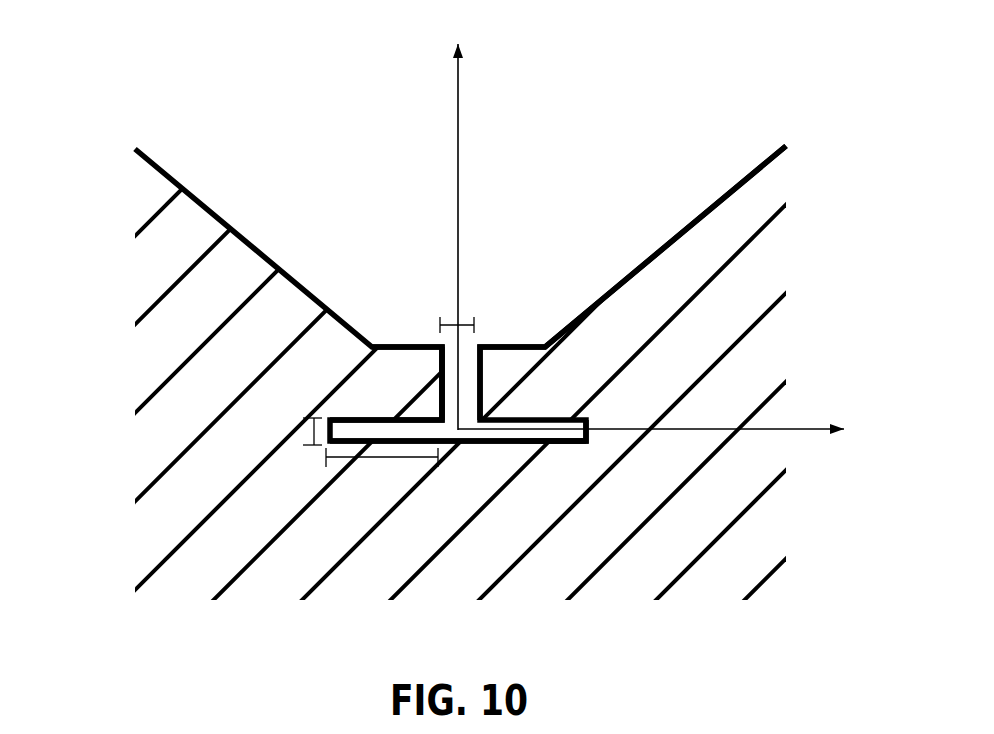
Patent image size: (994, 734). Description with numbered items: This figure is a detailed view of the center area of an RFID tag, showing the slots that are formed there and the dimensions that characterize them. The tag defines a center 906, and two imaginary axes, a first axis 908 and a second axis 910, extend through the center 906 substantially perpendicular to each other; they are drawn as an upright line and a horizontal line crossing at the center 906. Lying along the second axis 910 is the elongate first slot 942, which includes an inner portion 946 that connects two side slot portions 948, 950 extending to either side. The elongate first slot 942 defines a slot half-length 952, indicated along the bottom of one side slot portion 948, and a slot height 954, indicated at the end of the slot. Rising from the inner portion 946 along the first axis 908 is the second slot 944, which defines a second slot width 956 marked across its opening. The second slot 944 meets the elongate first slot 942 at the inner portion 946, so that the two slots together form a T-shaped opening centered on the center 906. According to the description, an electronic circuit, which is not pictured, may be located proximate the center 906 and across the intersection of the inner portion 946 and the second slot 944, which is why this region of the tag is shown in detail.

The first axis 908 is at (458, 78).
The second axis 910 is at (807, 428).
The center 906 is at (458, 443).
The elongate first slot 942 is at (496, 449).
The second slot 944 is at (487, 375).
The inner portion 946 is at (439, 385).
The side slot portion 948 is at (382, 413).
The side slot portion 950 is at (550, 447).
The slot half-length 952 is at (375, 459).
The slot height 954 is at (313, 430).
The second slot width 956 is at (453, 322).